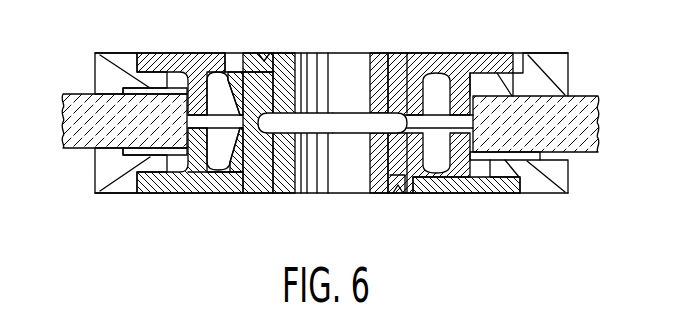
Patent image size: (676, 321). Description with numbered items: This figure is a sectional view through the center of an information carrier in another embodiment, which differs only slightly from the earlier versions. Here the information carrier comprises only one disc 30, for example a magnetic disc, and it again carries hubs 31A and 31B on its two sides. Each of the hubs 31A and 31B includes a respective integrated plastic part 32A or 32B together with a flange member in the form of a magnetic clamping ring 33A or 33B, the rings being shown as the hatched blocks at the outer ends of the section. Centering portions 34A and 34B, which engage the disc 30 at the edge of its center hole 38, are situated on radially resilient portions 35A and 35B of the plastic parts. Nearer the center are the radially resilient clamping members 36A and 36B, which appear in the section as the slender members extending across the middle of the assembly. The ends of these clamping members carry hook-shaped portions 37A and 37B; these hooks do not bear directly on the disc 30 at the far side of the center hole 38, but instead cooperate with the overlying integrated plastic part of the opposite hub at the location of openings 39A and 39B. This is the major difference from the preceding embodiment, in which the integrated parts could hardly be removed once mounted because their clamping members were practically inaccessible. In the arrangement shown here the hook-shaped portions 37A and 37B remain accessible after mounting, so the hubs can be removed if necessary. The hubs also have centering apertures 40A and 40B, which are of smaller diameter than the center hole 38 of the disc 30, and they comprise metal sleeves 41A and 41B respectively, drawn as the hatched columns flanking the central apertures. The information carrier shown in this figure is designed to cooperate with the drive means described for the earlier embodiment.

The disc 30 is at (83, 148).
The hub 31A is at (95, 67).
The hub 31B is at (95, 178).
The integrated plastic part 32A is at (227, 188).
The integrated plastic part 32B is at (192, 62).
The magnetic clamping ring 33A is at (127, 185).
The magnetic clamping ring 33B is at (123, 72).
The centering portion 34A is at (190, 138).
The centering portion 34B is at (190, 107).
The radially resilient portion 35A is at (195, 183).
The radially resilient portion 35B is at (235, 62).
The radially resilient clamping member 36A is at (267, 117).
The radially resilient clamping member 36B is at (403, 125).
The hook-shaped portion 37A is at (272, 57).
The hook-shaped portion 37B is at (403, 178).
The center hole 38 is at (458, 118).
The opening 39A is at (427, 187).
The opening 39B is at (262, 55).
The centering aperture 40A is at (312, 182).
The centering aperture 40B is at (357, 67).
The metal sleeve 41A is at (367, 182).
The metal sleeve 41B is at (417, 53).